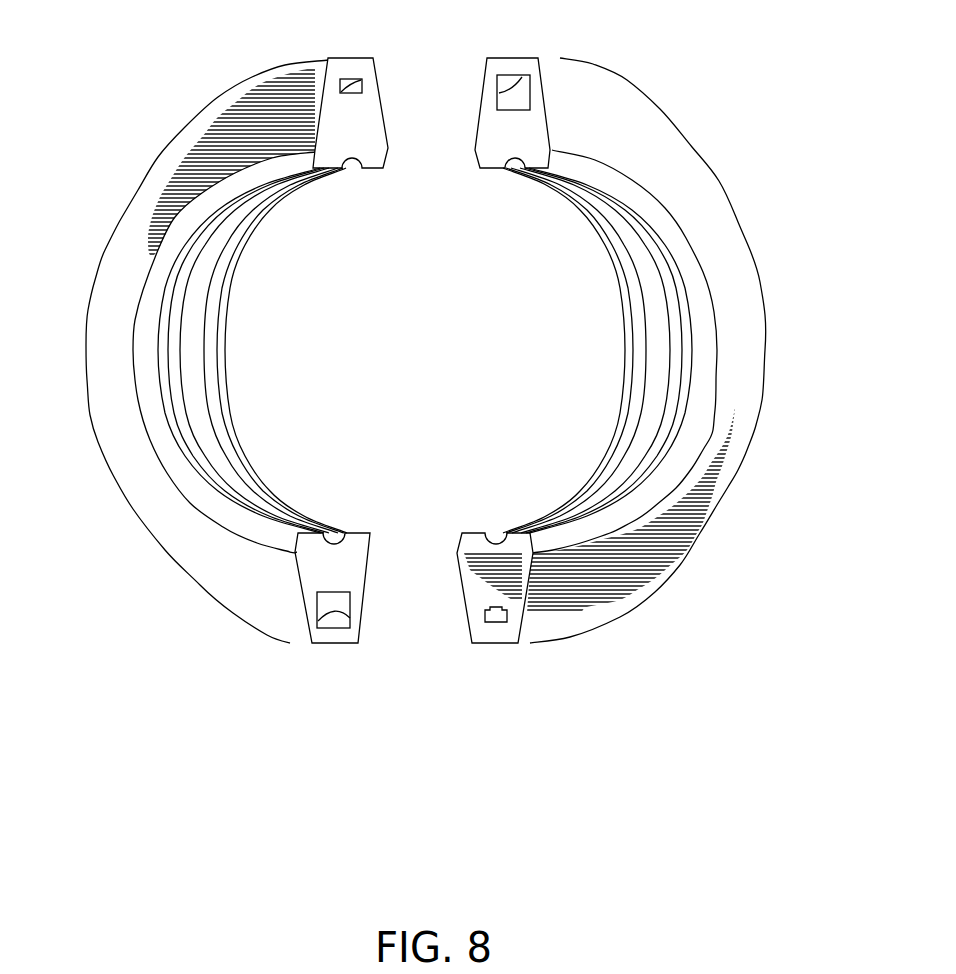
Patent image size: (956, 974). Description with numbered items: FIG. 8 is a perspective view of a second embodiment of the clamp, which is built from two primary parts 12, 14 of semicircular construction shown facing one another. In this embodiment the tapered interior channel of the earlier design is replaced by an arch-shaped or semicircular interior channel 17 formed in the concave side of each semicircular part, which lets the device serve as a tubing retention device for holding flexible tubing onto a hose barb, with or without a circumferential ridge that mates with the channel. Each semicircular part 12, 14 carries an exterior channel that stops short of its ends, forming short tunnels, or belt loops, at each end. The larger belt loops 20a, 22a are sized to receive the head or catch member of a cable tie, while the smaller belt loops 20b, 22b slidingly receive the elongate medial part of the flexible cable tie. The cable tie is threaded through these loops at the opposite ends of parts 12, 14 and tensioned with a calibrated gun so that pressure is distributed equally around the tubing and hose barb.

The semicircular part 12 is at (232, 369).
The semicircular part 14 is at (613, 350).
The interior channel 17 is at (348, 172).
The belt loop 20a is at (345, 80).
The belt loop 20b is at (350, 628).
The belt loop 22a is at (521, 82).
The belt loop 22b is at (487, 622).